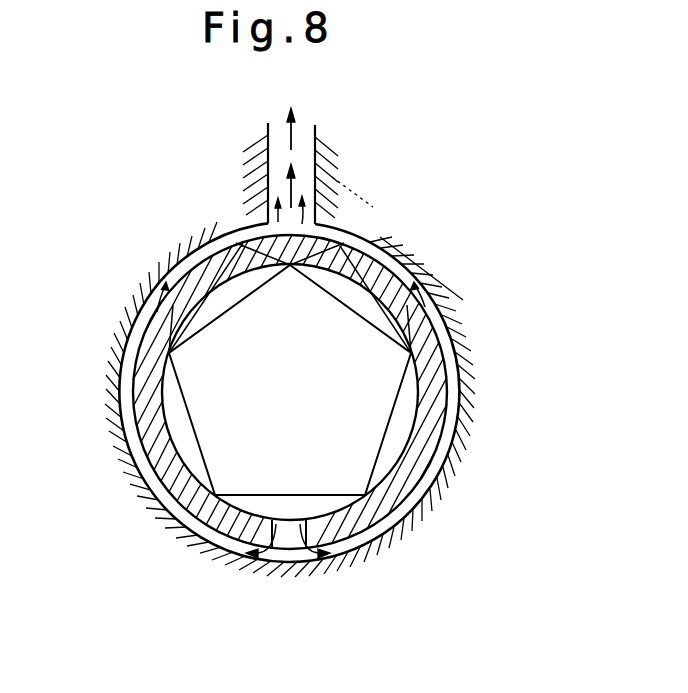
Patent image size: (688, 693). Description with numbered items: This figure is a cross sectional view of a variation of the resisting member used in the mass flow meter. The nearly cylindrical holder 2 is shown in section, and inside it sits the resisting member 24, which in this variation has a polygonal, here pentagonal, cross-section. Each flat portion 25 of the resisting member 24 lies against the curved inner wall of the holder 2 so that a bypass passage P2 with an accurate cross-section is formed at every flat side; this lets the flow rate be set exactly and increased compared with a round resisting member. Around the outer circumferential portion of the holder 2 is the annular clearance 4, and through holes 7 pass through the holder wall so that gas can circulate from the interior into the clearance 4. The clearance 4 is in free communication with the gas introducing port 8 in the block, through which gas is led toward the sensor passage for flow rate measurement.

The holder 2 is at (428, 442).
The clearance 4 is at (461, 382).
The through holes 7 is at (130, 300).
The gas introducing port 8 is at (307, 152).
The resisting member 24 is at (238, 447).
The flat portion 25 is at (196, 262).
The bypass passage P2 is at (405, 497).